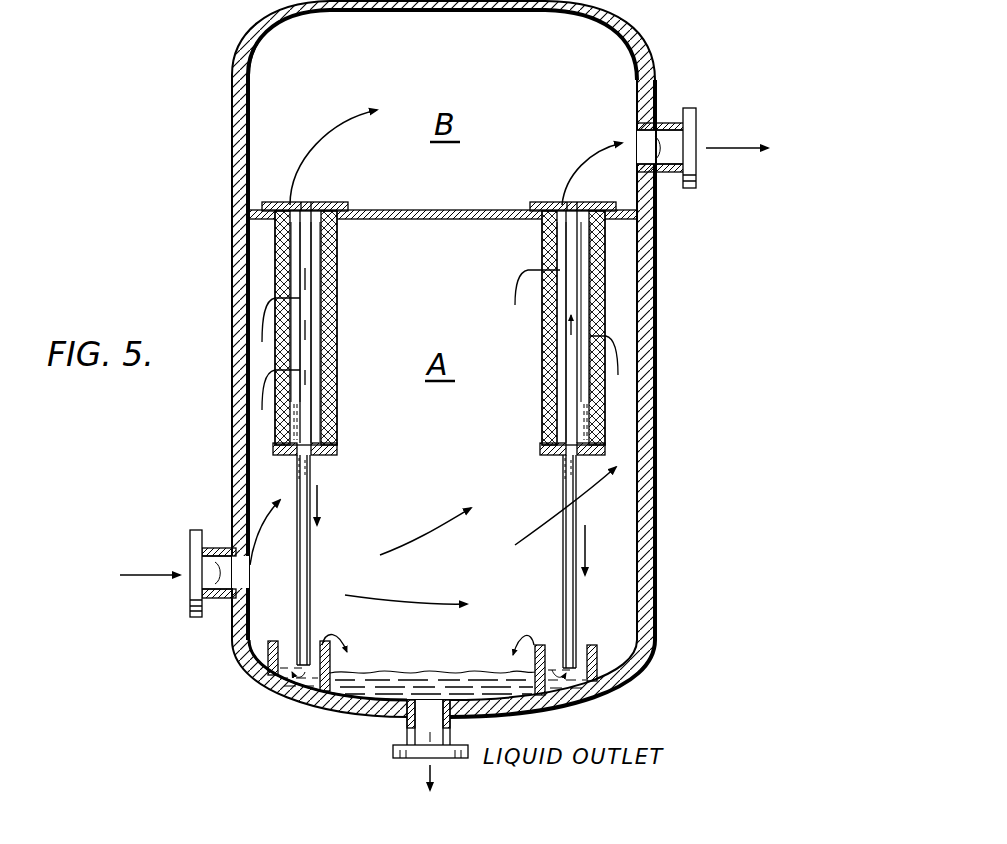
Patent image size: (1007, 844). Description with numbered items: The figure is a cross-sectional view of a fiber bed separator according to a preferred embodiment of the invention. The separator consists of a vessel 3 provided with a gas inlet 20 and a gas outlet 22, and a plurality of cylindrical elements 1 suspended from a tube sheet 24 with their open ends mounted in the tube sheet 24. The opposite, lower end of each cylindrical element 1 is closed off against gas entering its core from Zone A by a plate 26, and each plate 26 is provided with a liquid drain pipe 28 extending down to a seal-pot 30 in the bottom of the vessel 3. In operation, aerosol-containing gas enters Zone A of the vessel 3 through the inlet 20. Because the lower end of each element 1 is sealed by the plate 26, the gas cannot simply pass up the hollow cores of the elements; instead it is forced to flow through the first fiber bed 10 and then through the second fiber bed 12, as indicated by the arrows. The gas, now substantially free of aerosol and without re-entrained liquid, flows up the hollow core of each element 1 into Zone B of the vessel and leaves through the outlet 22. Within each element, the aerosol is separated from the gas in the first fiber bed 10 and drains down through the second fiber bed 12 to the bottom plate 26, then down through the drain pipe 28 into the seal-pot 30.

The cylindrical element 1 is at (337, 256).
The vessel 3 is at (655, 353).
The first fiber bed 10 is at (338, 364).
The second fiber bed 12 is at (325, 405).
The gas inlet 20 is at (190, 553).
The gas outlet 22 is at (700, 130).
The tube sheet 24 is at (408, 210).
The plate 26 is at (325, 455).
The liquid drain pipe 28 is at (311, 542).
The seal-pot 30 is at (268, 650).